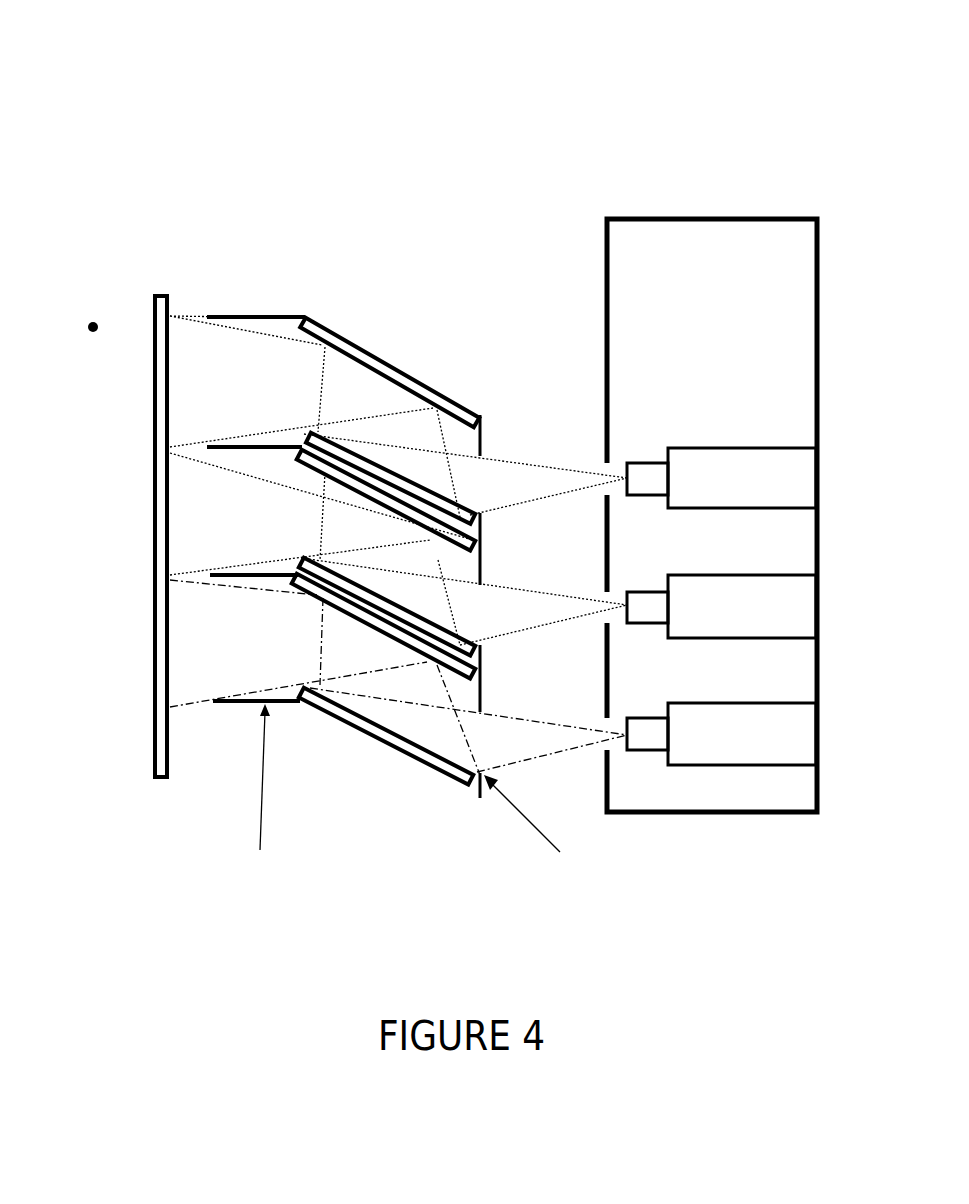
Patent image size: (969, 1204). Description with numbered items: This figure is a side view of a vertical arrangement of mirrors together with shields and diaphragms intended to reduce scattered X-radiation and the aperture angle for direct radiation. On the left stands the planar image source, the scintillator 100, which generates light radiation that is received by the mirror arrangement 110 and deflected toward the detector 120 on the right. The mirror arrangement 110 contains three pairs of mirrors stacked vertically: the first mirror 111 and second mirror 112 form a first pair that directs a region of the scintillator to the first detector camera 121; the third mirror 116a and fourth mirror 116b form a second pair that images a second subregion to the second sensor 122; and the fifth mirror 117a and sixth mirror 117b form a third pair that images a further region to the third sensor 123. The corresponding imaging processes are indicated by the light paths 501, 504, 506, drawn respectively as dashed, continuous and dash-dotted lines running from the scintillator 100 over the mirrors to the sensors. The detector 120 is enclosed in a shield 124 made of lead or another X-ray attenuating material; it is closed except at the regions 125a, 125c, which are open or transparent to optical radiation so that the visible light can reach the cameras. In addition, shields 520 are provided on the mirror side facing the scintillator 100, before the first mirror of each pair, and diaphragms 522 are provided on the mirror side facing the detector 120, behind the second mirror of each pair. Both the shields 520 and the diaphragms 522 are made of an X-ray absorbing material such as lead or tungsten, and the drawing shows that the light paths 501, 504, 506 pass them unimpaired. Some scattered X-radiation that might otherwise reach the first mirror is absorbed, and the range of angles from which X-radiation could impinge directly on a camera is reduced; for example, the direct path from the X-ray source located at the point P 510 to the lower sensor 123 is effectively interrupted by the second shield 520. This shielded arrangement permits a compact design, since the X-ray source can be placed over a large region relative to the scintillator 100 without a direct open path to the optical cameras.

The planar image source 100 is at (156, 780).
The mirror arrangement 110 is at (397, 168).
The first mirror 111 is at (415, 379).
The second mirror 112 is at (481, 518).
The third mirror 116a is at (481, 558).
The fourth mirror 116b is at (481, 648).
The fifth mirror 117a is at (354, 618).
The sixth mirror 117b is at (427, 776).
The detector 120 is at (761, 427).
The first detector camera 121 is at (808, 478).
The second sensor 122 is at (808, 610).
The third sensor 123 is at (808, 735).
The shield 124 is at (821, 346).
The region 125a is at (606, 473).
The region 125c is at (607, 748).
The light path 501 is at (183, 312).
The light path 504 is at (172, 446).
The light path 506 is at (172, 575).
The point P 510 is at (64, 328).
The shield 520 is at (243, 314).
The diaphragm 522 is at (482, 443).